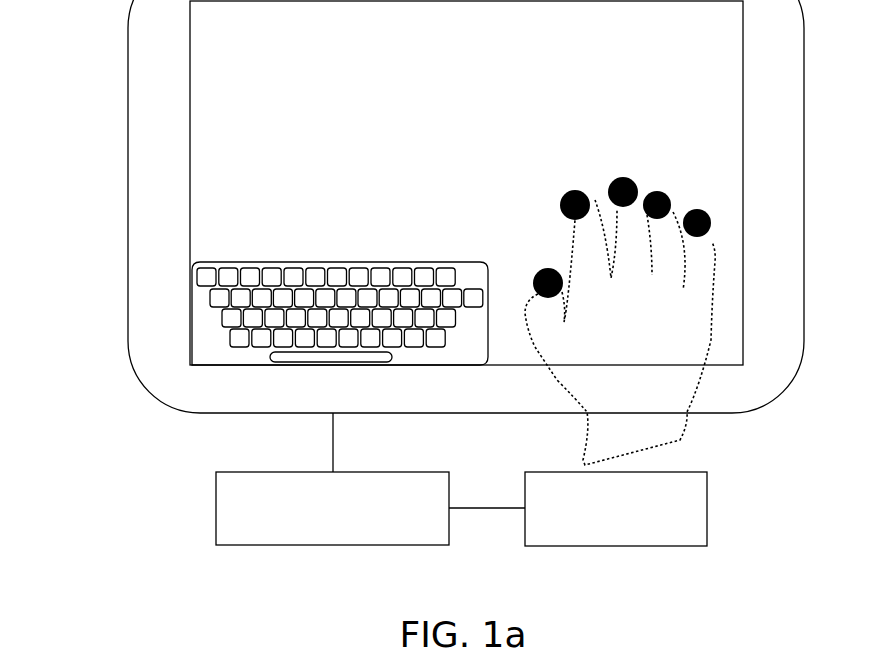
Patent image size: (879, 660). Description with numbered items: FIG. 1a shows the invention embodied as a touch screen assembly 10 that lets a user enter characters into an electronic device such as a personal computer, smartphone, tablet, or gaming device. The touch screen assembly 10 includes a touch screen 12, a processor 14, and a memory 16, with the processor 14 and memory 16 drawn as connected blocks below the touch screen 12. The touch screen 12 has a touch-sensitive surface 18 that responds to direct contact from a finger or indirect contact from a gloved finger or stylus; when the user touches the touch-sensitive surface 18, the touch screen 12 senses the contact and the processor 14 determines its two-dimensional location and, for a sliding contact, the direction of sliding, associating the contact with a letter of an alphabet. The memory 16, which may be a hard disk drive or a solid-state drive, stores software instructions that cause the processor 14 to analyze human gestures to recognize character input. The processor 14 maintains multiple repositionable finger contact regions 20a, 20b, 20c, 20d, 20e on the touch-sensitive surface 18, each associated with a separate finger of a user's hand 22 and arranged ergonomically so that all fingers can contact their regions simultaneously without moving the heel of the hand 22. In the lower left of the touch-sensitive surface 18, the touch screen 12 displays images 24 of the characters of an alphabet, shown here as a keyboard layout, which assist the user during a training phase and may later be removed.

The touch screen assembly 10 is at (102, 58).
The touch screen 12 is at (232, 413).
The processor 14 is at (305, 545).
The memory 16 is at (578, 546).
The touch-sensitive surface 18 is at (283, 69).
The finger contact region 20a is at (548, 270).
The finger contact region 20b is at (567, 192).
The finger contact region 20c is at (620, 178).
The finger contact region 20d is at (662, 192).
The finger contact region 20e is at (713, 203).
The user's hand 22 is at (636, 338).
The images of the characters of an alphabet 24 is at (287, 262).